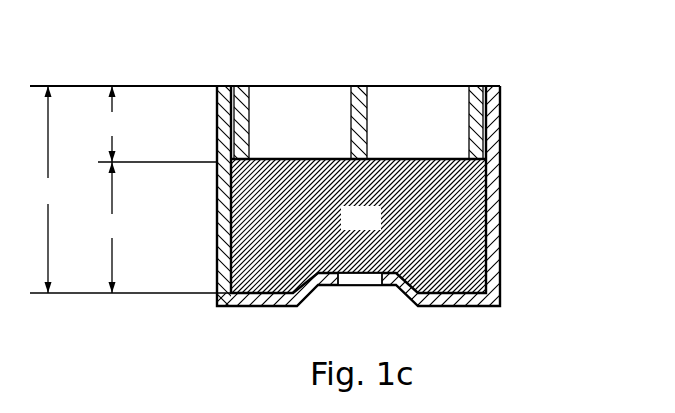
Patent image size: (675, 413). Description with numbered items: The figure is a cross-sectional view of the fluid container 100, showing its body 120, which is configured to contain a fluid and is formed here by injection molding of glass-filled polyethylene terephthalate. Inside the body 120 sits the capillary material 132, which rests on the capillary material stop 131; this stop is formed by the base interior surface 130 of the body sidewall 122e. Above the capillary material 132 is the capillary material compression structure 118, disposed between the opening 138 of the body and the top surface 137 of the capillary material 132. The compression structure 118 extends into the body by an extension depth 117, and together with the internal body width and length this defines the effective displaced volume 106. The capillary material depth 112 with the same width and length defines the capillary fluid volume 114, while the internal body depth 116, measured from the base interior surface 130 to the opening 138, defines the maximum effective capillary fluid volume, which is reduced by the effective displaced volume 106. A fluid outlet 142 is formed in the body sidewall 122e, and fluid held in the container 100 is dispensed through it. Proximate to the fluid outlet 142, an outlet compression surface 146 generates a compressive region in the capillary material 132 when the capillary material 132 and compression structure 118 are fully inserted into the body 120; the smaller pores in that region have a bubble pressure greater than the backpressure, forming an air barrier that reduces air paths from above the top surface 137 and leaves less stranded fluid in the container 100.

The fluid container 100 is at (479, 45).
The effective displaced volume 106 is at (317, 133).
The capillary material depth 112 is at (110, 227).
The capillary fluid volume 114 is at (376, 227).
The internal body depth 116 is at (130, 189).
The extension depth 117 is at (157, 124).
The capillary material compression structure 118 is at (244, 86).
The body 120 is at (500, 211).
The body sidewall 122e is at (238, 297).
The base interior surface 130 is at (230, 266).
The capillary material stop 131 is at (487, 270).
The capillary material 132 is at (232, 226).
The top surface 137 is at (337, 160).
The opening 138 is at (342, 72).
The fluid outlet 142 is at (357, 279).
The outlet compression surface 146 is at (323, 273).